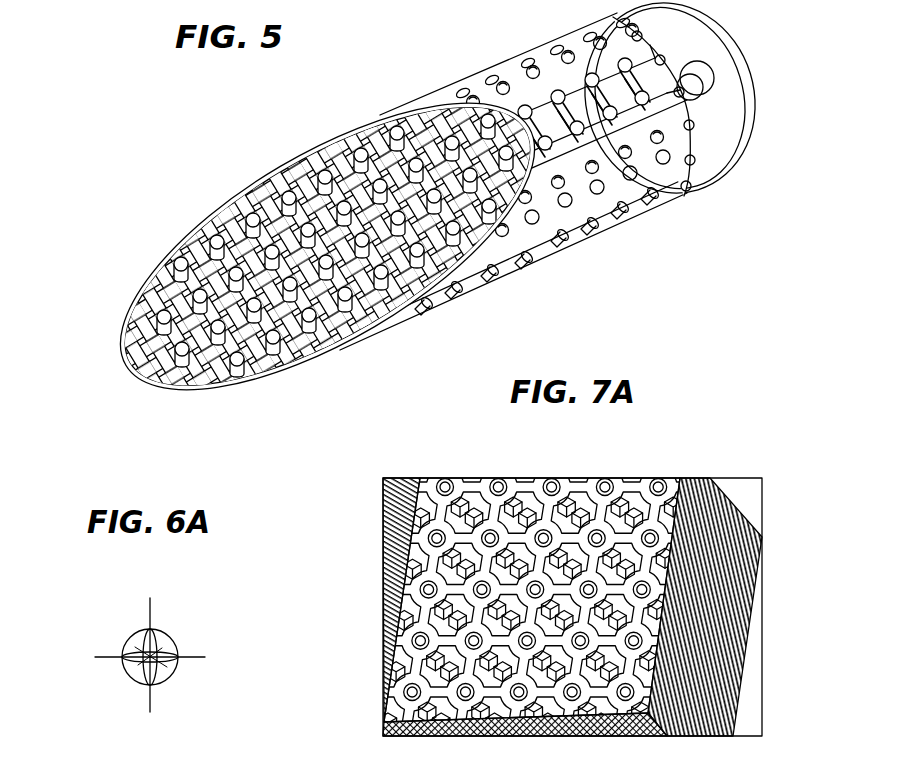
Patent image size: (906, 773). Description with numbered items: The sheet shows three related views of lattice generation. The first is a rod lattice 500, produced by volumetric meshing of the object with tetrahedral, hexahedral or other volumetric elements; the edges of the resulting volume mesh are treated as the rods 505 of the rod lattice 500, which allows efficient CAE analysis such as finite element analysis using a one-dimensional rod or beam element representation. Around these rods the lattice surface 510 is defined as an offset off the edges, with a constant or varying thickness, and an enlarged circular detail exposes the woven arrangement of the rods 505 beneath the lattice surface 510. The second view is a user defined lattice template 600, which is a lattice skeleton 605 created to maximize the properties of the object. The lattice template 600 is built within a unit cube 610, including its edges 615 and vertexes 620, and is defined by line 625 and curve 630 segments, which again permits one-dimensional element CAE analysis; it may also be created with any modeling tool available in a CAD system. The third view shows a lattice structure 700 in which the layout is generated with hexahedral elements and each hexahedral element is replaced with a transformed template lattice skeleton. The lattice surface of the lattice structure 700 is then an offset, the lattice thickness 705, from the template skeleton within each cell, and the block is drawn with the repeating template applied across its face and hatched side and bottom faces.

In FIG. 5, the rod lattice 500 is at (252, 78).
In FIG. 5, the rods 505 is at (156, 378).
In FIG. 5, the lattice surface 510 is at (158, 324).
In FIG. 6A, the lattice template 600 is at (165, 573).
In FIG. 6A, the lattice skeleton 605 is at (190, 692).
In FIG. 6A, the unit cube 610 is at (108, 690).
In FIG. 6A, the edges 615 is at (110, 656).
In FIG. 6A, the vertexes 620 is at (149, 630).
In FIG. 6A, the line segments 625 is at (152, 607).
In FIG. 6A, the curve segments 630 is at (177, 647).
In FIG. 7A, the lattice structure 700 is at (588, 442).
In FIG. 7A, the lattice thickness 705 is at (470, 484).